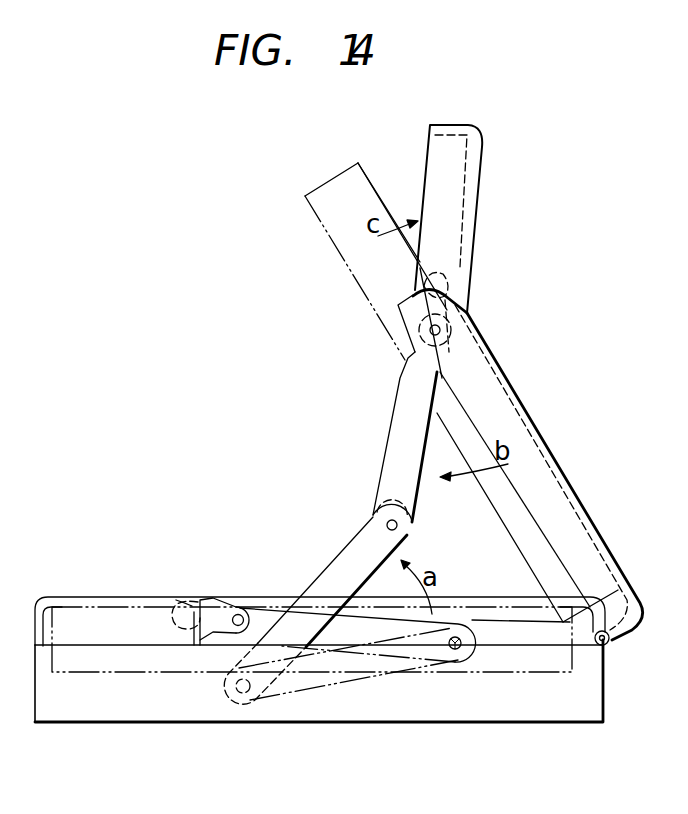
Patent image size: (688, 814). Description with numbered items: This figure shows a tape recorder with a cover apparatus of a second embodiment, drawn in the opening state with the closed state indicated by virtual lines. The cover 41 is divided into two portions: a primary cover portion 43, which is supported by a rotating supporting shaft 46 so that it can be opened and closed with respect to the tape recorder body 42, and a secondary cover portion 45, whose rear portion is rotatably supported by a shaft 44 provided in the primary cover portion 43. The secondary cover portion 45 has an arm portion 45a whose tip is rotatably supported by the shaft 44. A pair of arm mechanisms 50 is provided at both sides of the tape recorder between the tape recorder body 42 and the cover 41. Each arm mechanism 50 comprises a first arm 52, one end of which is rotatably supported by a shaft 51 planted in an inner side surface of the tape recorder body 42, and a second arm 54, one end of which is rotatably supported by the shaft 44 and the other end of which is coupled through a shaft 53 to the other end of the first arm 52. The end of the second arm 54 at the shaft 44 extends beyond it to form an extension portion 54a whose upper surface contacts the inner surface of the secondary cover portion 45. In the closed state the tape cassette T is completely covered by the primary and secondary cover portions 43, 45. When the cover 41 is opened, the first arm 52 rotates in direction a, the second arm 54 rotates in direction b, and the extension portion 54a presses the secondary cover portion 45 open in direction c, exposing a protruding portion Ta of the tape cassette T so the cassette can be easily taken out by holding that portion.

The cover 41 is at (553, 380).
The tape recorder body 42 is at (408, 713).
The primary cover portion 43 is at (567, 488).
The shaft 44 is at (441, 328).
The secondary cover portion 45 is at (484, 152).
The arm portion 45a is at (398, 311).
The rotating supporting shaft 46 is at (607, 644).
The arm mechanism 50 is at (366, 440).
The shaft 51 is at (237, 700).
The first arm 52 is at (335, 577).
The shaft 53 is at (378, 512).
The second arm 54 is at (400, 390).
The extension portion 54a is at (452, 272).
The tape cassette T is at (305, 197).
The protruding portion Ta is at (380, 180).